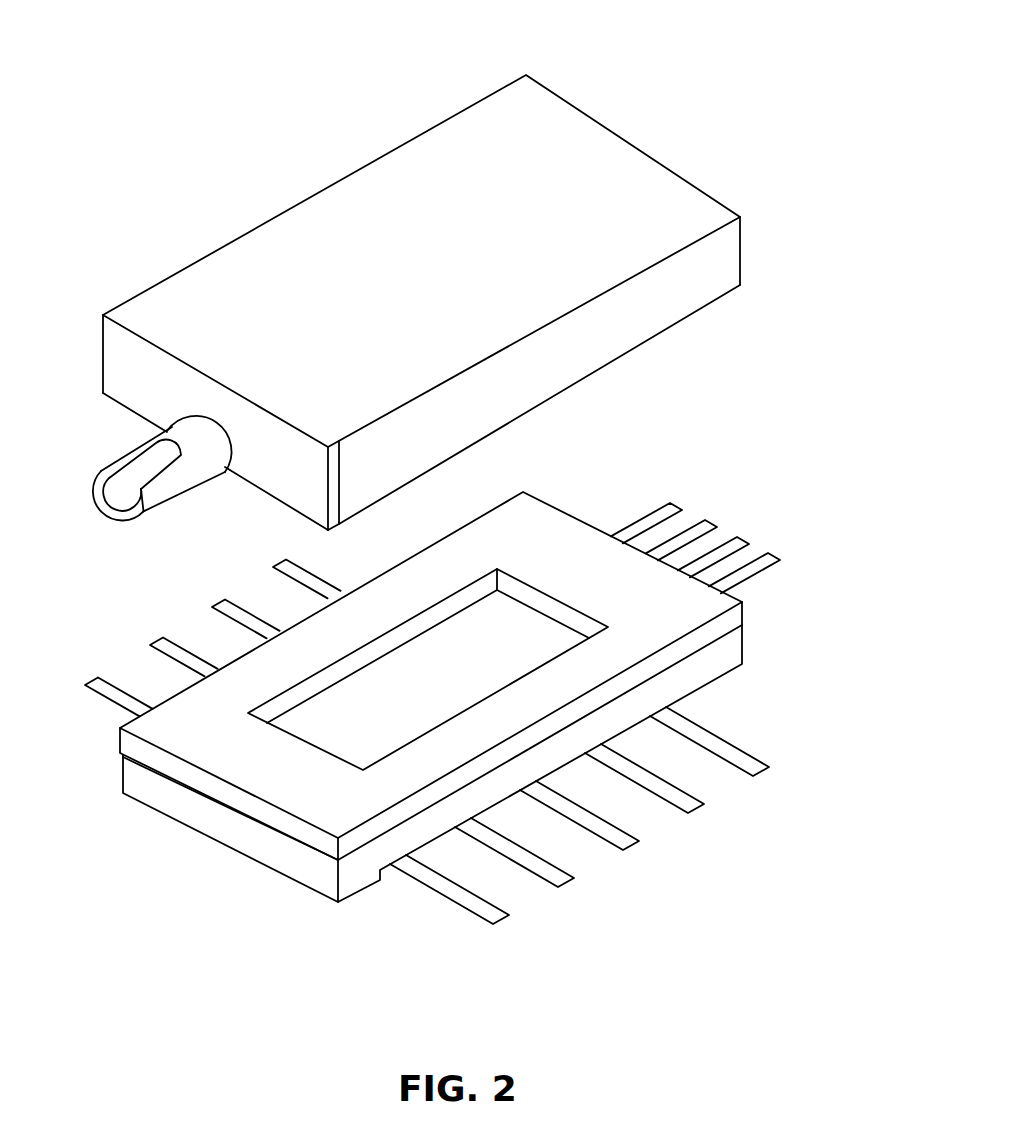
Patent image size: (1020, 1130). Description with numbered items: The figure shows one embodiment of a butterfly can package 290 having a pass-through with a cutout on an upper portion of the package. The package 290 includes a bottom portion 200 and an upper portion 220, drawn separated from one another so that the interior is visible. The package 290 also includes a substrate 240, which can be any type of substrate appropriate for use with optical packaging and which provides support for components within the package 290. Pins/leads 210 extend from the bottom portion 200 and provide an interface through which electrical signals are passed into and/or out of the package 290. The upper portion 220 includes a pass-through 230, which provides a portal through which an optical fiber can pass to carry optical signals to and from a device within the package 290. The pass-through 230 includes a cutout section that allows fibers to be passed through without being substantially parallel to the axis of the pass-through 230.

The bottom portion 200 is at (727, 667).
The pins/leads 210 is at (797, 571).
The upper portion 220 is at (710, 213).
The pass-through 230 is at (153, 514).
The substrate 240 is at (500, 645).
The package 290 is at (831, 108).